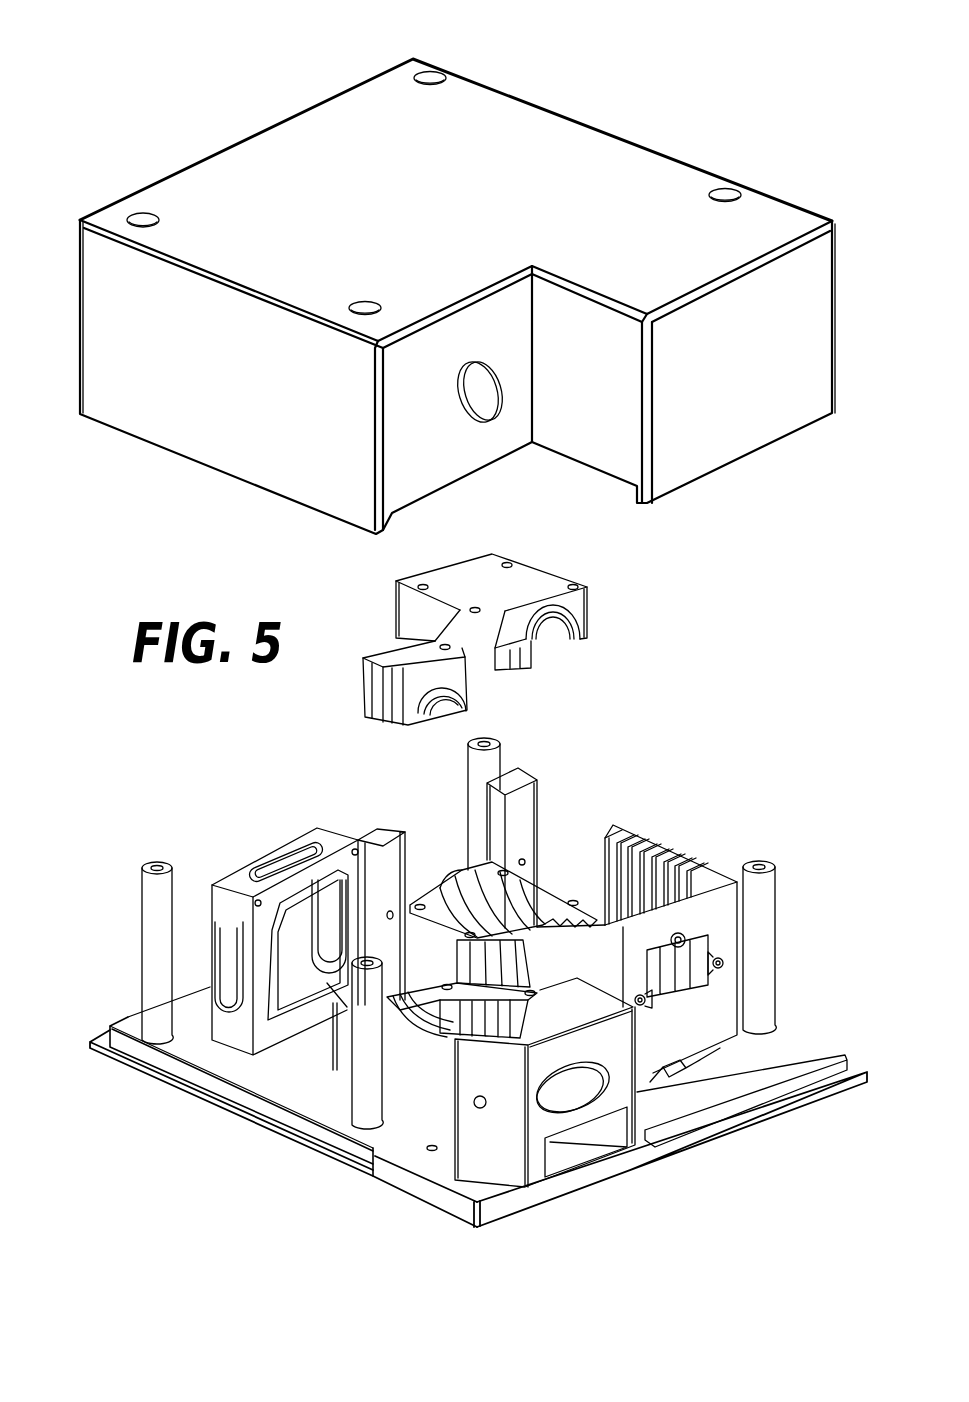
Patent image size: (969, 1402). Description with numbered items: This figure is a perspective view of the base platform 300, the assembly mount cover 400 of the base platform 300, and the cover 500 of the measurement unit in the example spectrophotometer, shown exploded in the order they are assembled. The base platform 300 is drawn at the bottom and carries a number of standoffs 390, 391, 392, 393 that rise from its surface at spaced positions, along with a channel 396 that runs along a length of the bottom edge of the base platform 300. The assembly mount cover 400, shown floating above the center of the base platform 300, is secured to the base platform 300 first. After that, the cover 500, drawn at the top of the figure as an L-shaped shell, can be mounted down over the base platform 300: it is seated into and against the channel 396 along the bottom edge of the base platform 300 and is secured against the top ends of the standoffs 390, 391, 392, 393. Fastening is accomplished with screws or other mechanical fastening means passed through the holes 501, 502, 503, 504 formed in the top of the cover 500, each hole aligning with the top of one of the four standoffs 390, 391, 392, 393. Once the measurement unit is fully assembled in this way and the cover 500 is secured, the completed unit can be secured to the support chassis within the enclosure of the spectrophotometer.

The base platform 300 is at (577, 797).
The standoff 390 is at (145, 925).
The standoff 391 is at (475, 766).
The standoff 392 is at (363, 1075).
The standoff 393 is at (767, 930).
The channel 396 is at (102, 1040).
The assembly mount cover 400 is at (533, 577).
The cover 500 is at (570, 130).
The hole 501 is at (140, 212).
The hole 502 is at (424, 71).
The hole 503 is at (362, 303).
The hole 504 is at (734, 188).